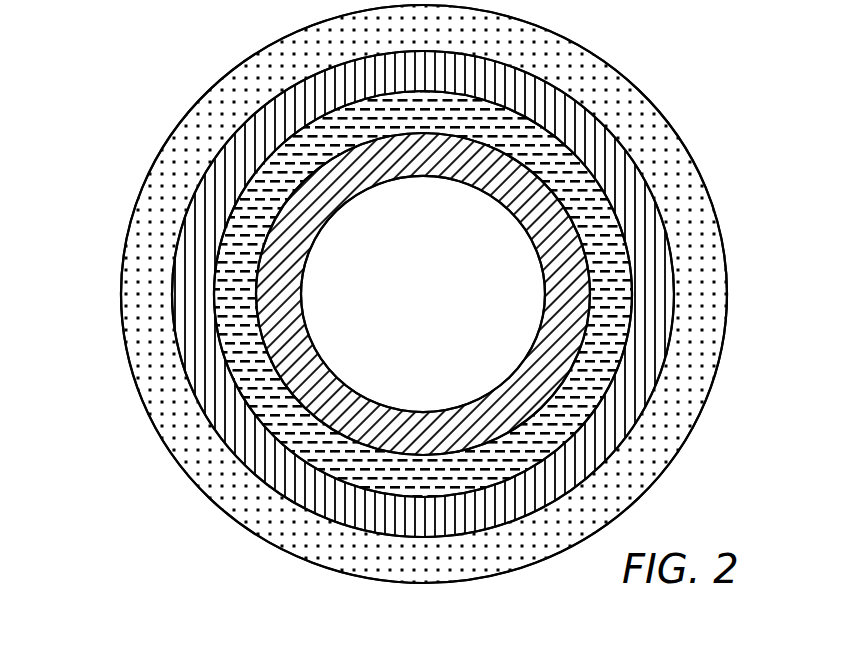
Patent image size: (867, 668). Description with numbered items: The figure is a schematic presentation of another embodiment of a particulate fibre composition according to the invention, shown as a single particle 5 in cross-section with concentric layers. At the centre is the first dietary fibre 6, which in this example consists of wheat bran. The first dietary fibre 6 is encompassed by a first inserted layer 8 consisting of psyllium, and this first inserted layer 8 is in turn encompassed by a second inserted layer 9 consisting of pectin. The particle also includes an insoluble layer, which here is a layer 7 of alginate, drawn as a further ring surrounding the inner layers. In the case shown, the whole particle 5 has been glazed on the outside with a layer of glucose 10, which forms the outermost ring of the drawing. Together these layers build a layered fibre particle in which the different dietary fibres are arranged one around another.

The particle 5 is at (152, 86).
The first dietary fibre 6 is at (360, 289).
The insoluble layer of alginate 7 is at (630, 200).
The first inserted layer 8 is at (343, 417).
The second inserted layer 9 is at (607, 278).
The layer of glucose 10 is at (177, 196).